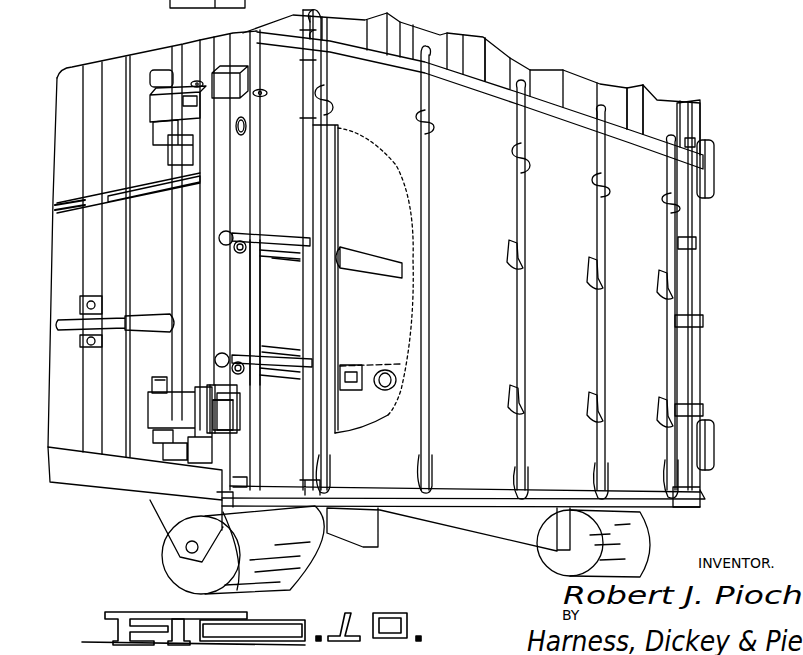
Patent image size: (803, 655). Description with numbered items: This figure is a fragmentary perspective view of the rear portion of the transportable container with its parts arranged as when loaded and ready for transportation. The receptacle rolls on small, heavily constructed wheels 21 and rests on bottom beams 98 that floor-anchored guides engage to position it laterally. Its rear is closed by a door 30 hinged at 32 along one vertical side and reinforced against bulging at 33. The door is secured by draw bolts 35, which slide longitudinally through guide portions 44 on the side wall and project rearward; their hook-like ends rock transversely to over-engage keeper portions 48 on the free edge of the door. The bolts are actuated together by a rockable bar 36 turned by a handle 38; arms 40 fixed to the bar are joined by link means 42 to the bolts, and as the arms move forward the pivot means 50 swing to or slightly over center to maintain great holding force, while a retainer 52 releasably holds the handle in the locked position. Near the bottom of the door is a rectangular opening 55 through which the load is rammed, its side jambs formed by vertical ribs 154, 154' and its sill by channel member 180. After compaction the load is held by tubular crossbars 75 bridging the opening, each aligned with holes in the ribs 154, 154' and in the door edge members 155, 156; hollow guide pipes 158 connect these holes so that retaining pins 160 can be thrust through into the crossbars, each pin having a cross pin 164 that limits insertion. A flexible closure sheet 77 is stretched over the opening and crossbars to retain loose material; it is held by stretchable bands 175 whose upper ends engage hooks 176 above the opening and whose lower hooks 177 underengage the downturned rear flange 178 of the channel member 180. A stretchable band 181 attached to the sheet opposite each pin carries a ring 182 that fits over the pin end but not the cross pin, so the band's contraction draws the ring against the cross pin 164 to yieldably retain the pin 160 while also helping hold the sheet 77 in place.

The wheel 21 is at (187, 573).
The door 30 is at (662, 90).
The hinge 32 is at (714, 153).
The door reinforcement 33 is at (528, 75).
The draw bolt 35 is at (232, 80).
The rockable bar 36 is at (175, 260).
The handle 38 is at (52, 262).
The arm 40 is at (166, 380).
The link means 42 is at (197, 437).
The guide portion 44 is at (203, 84).
The keeper portion 48 is at (256, 95).
The pivot means 50 is at (170, 137).
The retainer 52 is at (83, 300).
The rectangular opening 55 is at (388, 330).
The tubular crossbar 75 is at (371, 258).
The flexible closure sheet 77 is at (470, 478).
The bottom beam 98 is at (523, 523).
The vertical rib 154 is at (346, 251).
The vertical rib 154' is at (634, 84).
The door edge member 155 is at (697, 112).
The door edge member 156 is at (255, 303).
The hollow guide pipe 158 is at (742, 222).
The retaining pin 160 is at (225, 232).
The cross pin 164 is at (242, 240).
The stretchable band 175 is at (516, 278).
The hook 176 is at (603, 92).
The hook 177 is at (528, 490).
The downturned rear flange 178 is at (293, 493).
The channel member 180 is at (232, 490).
The stretchable band 181 is at (292, 234).
The ring 182 is at (230, 252).